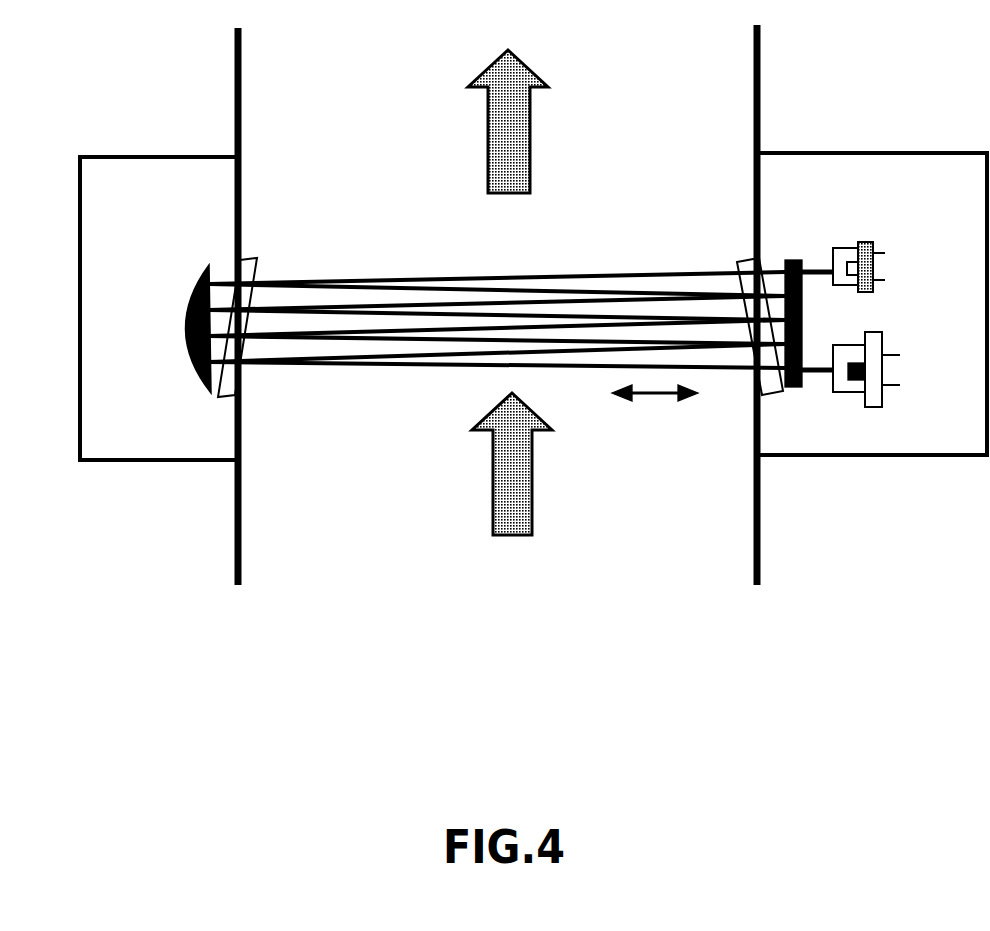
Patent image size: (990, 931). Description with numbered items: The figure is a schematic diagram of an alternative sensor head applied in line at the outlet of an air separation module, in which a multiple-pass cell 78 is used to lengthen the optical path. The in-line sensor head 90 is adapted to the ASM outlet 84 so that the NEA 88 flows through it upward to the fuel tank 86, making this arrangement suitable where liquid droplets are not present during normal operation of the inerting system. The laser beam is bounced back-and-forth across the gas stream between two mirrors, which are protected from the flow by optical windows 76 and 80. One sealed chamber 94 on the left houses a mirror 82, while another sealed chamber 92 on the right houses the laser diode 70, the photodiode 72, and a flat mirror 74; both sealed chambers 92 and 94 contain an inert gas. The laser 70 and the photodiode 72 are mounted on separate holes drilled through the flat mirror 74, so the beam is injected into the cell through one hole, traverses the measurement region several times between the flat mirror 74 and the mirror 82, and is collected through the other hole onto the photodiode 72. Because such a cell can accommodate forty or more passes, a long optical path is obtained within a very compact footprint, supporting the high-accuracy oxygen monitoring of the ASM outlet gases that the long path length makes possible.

The laser diode 70 is at (863, 238).
The photodiode 72 is at (885, 340).
The flat mirror 74 is at (792, 257).
The optical window 76 is at (750, 257).
The multiple-pass cell 78 is at (655, 409).
The optical window 80 is at (253, 258).
The mirror 82 is at (192, 282).
The ASM outlet 84 is at (517, 489).
The fuel tank 86 is at (505, 102).
The NEA 88 is at (497, 291).
The in-line sensor head 90 is at (760, 73).
The sealed chamber 92 is at (847, 148).
The sealed chamber 94 is at (158, 155).